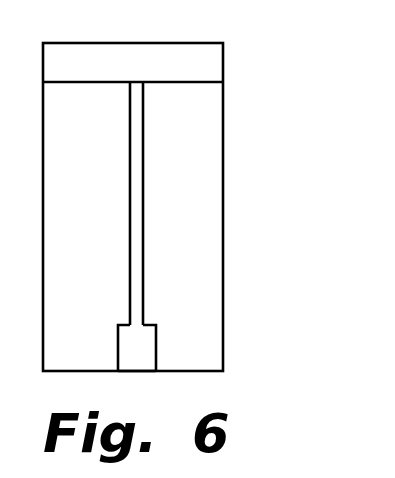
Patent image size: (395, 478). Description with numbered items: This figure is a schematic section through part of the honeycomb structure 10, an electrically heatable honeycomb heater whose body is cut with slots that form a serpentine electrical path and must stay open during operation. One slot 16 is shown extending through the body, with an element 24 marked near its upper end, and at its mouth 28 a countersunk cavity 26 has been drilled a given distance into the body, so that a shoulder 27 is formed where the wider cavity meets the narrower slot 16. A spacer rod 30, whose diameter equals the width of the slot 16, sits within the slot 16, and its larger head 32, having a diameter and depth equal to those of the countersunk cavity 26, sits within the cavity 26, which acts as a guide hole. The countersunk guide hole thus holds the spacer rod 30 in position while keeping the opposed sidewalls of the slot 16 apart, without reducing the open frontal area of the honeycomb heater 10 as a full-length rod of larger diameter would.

The honeycomb structure 10 is at (224, 118).
The slot 16 is at (190, 192).
The channel 24 is at (133, 85).
The countersunk cavity 26 is at (150, 356).
The shoulder 27 is at (150, 325).
The mouth 28 is at (143, 373).
The spacer rod 30 is at (134, 152).
The head 32 is at (128, 348).